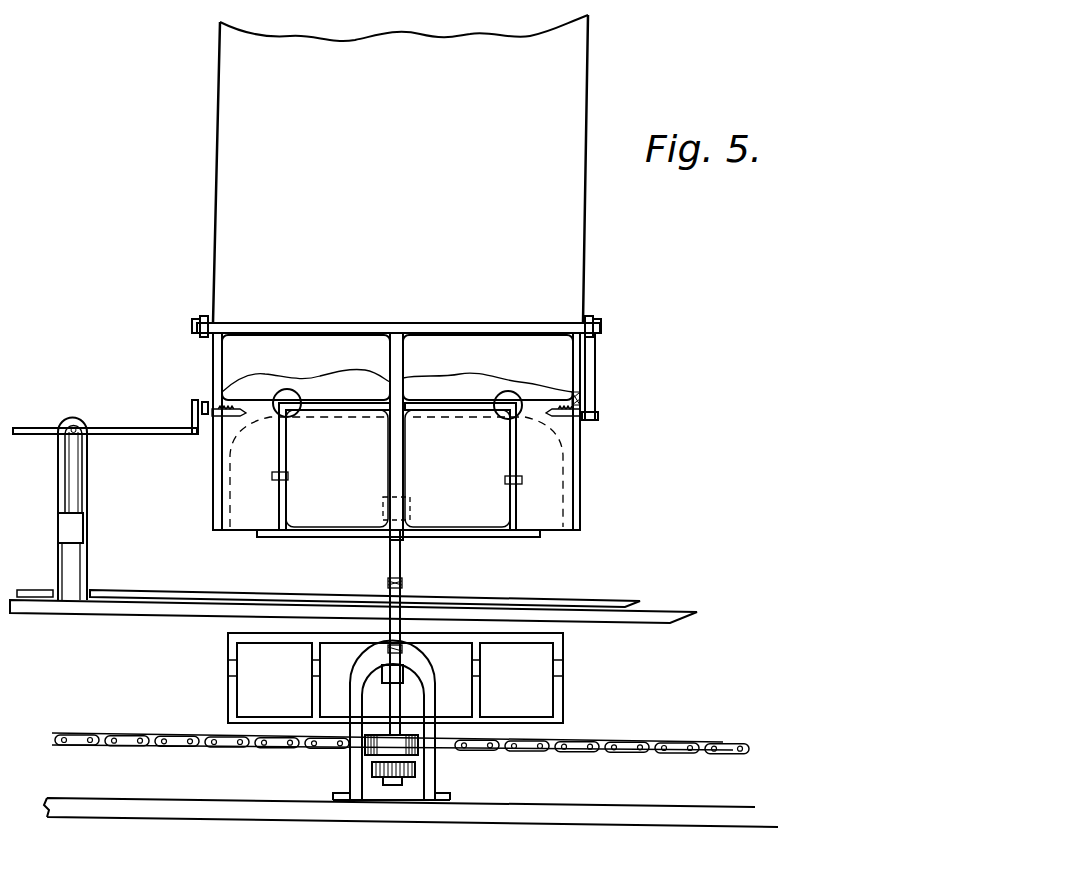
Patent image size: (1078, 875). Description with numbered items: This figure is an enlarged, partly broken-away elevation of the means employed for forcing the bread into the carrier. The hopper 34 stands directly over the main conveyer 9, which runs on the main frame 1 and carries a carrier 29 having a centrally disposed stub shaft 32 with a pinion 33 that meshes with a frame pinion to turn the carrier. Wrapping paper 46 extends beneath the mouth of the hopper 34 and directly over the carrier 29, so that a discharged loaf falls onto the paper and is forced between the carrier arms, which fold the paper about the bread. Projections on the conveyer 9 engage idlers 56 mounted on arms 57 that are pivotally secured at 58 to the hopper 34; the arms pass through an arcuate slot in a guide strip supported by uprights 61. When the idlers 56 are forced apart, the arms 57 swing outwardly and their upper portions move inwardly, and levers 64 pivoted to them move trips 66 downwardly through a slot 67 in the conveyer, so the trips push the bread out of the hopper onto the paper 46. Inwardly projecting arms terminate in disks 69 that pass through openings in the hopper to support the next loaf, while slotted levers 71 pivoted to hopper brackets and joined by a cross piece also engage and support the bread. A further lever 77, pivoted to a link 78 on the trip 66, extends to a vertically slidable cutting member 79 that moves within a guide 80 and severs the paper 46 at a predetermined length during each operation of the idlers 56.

The hopper 34 is at (245, 160).
The lever 64 is at (592, 373).
The trip 66 is at (236, 409).
The slot 67 is at (580, 450).
The disk 69 is at (299, 394).
The slotted lever 71 is at (283, 448).
The pivot 58 is at (410, 505).
The arm 57 is at (400, 572).
The lever 77 is at (128, 426).
The link 78 is at (191, 420).
The cutting member 79 is at (73, 478).
The guide 80 is at (62, 565).
The wrapping paper 46 is at (146, 596).
The carrier 29 is at (322, 714).
The upright 61 is at (413, 695).
The idler 56 is at (365, 752).
The main conveyer 9 is at (602, 739).
The pinion 33 is at (420, 771).
The stub shaft 32 is at (382, 791).
The main frame 1 is at (528, 811).